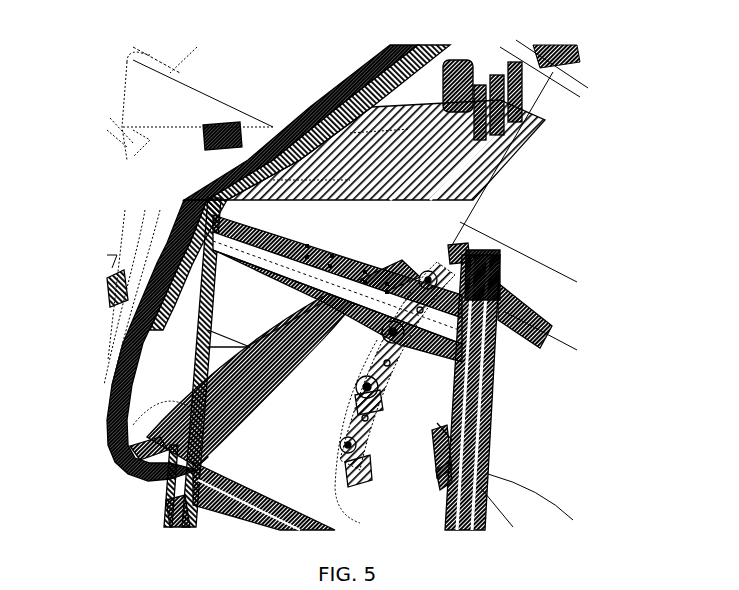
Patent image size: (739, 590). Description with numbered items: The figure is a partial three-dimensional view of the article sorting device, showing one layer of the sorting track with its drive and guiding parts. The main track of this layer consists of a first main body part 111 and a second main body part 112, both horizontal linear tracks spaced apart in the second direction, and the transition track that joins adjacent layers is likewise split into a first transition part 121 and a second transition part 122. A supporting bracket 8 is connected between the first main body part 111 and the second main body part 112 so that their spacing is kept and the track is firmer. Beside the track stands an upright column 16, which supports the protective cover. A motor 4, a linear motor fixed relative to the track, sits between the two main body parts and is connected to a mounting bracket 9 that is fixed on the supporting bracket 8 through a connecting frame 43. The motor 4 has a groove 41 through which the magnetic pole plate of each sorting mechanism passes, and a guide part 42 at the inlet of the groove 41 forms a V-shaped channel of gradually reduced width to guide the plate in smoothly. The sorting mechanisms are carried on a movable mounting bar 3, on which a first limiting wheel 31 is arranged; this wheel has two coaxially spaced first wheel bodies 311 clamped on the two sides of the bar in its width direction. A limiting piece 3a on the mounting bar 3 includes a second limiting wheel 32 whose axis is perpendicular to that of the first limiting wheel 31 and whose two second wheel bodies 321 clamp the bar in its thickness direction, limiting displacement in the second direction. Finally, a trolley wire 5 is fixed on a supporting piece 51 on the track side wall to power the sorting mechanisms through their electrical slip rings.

The mounting bracket 9 is at (380, 183).
The groove 41 is at (483, 88).
The guide part 42 is at (386, 150).
The motor 4 is at (490, 96).
The connecting frame 43 is at (482, 140).
The second main body part 112 is at (222, 158).
The second transition part 122 is at (147, 261).
The first main body part 111 is at (452, 247).
The upright column 16 is at (480, 294).
The supporting bracket 8 is at (440, 333).
The first wheel body 311 is at (390, 363).
The mounting bar 3 is at (370, 407).
The limiting piece 3a is at (383, 391).
The supporting piece 51 is at (364, 376).
The second limiting wheel 32 is at (365, 388).
The first limiting wheel 31 is at (347, 428).
The first transition part 121 is at (353, 490).
The second wheel body 321 is at (360, 442).
The trolley wire 5 is at (133, 480).